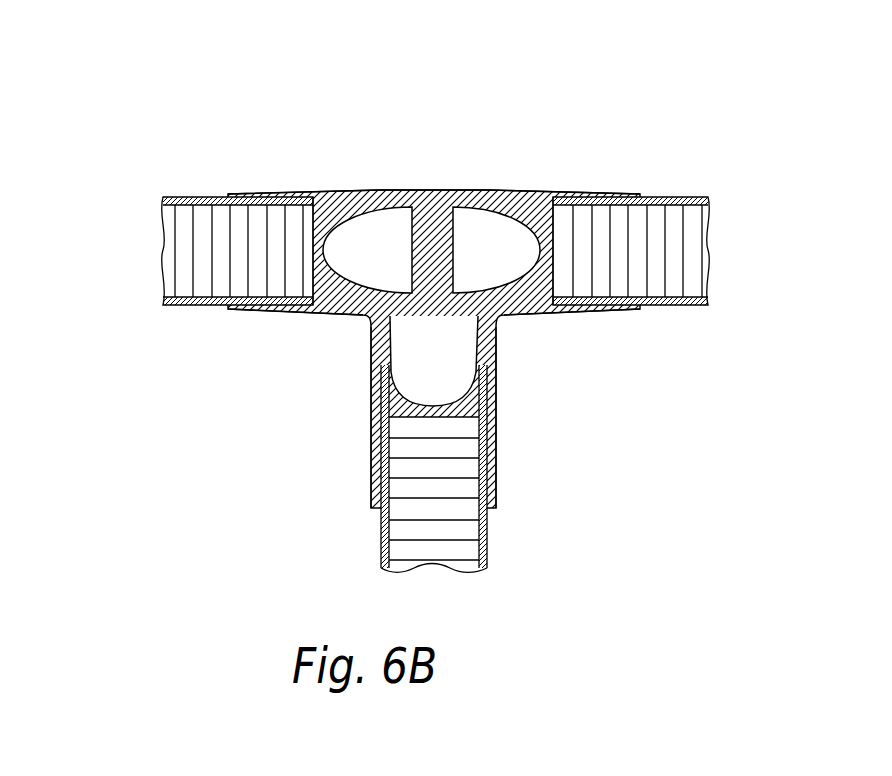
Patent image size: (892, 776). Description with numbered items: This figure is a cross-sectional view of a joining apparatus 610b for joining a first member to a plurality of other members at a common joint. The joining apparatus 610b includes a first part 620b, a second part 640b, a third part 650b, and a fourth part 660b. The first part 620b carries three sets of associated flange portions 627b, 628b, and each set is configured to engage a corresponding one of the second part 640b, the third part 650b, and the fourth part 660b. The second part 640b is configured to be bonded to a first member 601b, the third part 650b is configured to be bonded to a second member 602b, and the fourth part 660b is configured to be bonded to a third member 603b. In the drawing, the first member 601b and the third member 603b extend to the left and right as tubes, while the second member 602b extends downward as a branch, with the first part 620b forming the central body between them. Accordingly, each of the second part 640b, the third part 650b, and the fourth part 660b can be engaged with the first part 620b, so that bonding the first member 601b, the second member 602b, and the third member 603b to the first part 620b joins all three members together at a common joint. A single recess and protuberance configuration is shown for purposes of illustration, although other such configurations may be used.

The first member 601b is at (168, 308).
The second member 602b is at (488, 553).
The third member 603b is at (703, 305).
The joining apparatus 610b is at (411, 354).
The first part 620b is at (380, 190).
The flange portion 627b is at (527, 187).
The flange portion 628b is at (240, 193).
The second part 640b is at (313, 247).
The third part 650b is at (453, 418).
The fourth part 660b is at (560, 250).